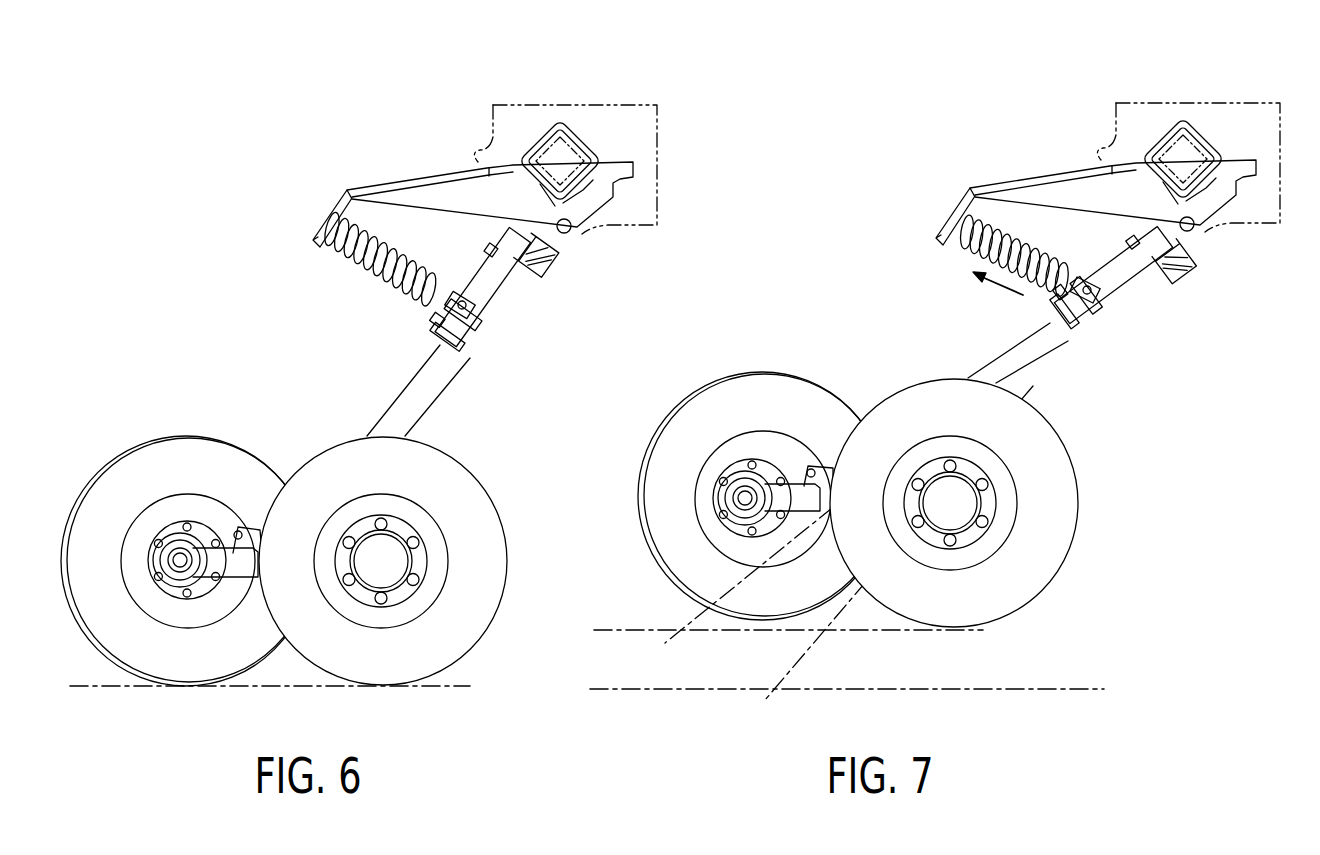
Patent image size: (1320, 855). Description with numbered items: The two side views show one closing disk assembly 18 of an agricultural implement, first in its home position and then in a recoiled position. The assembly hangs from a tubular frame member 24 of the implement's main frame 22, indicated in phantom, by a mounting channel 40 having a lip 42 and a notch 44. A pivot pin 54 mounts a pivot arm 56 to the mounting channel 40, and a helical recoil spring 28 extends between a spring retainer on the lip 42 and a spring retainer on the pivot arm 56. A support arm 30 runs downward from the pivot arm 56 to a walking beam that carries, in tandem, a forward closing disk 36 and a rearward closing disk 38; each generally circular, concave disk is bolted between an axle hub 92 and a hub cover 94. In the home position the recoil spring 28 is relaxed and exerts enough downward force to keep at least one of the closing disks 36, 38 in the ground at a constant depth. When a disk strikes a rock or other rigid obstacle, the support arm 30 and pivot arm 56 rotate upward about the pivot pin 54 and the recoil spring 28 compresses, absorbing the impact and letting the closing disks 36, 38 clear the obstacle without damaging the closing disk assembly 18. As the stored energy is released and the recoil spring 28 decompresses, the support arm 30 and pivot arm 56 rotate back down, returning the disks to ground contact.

In FIG. 6, the closing disk assembly 18 is at (281, 377).
In FIG. 7, the closing disk assembly 18 is at (1197, 410).
In FIG. 6, the main frame 22 is at (587, 112).
In FIG. 7, the main frame 22 is at (1217, 107).
In FIG. 6, the tubular frame member 24 is at (552, 140).
In FIG. 7, the tubular frame member 24 is at (1173, 140).
In FIG. 6, the helical recoil spring 28 is at (355, 265).
In FIG. 7, the helical recoil spring 28 is at (967, 257).
In FIG. 6, the support arm 30 is at (422, 395).
In FIG. 7, the support arm 30 is at (1036, 354).
In FIG. 6, the forward closing disk 36 is at (455, 487).
In FIG. 7, the forward closing disk 36 is at (1056, 491).
In FIG. 6, the rearward closing disk 38 is at (175, 462).
In FIG. 7, the rearward closing disk 38 is at (777, 398).
In FIG. 6, the mounting channel 40 is at (432, 197).
In FIG. 7, the mounting channel 40 is at (1055, 192).
In FIG. 6, the lip 42 is at (335, 215).
In FIG. 7, the lip 42 is at (958, 207).
In FIG. 6, the notch 44 is at (577, 202).
In FIG. 7, the notch 44 is at (1190, 200).
In FIG. 6, the pivot pin 54 is at (566, 233).
In FIG. 7, the pivot pin 54 is at (1189, 232).
In FIG. 6, the pivot arm 56 is at (503, 293).
In FIG. 7, the pivot arm 56 is at (1122, 272).
In FIG. 6, the axle hub 92 is at (160, 563).
In FIG. 7, the axle hub 92 is at (724, 495).
In FIG. 6, the hub cover 94 is at (387, 570).
In FIG. 7, the hub cover 94 is at (956, 516).